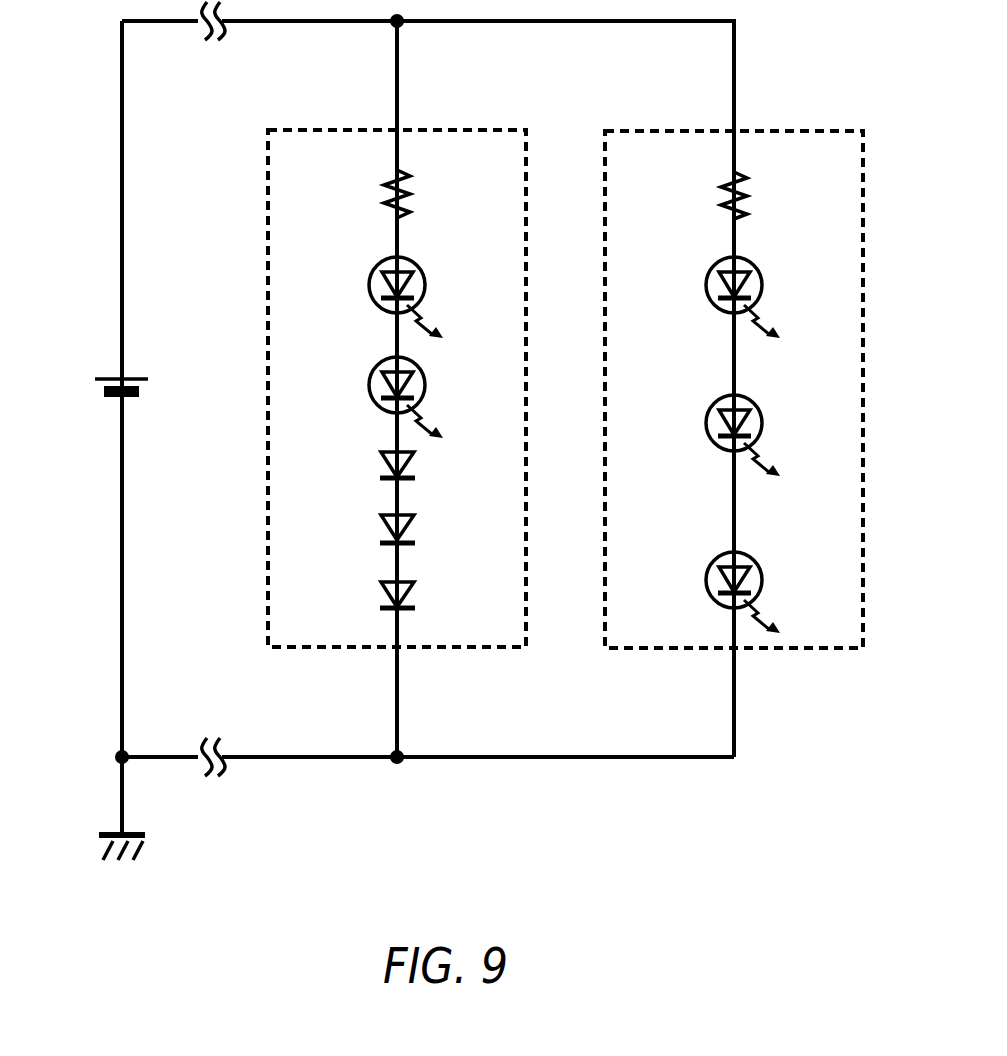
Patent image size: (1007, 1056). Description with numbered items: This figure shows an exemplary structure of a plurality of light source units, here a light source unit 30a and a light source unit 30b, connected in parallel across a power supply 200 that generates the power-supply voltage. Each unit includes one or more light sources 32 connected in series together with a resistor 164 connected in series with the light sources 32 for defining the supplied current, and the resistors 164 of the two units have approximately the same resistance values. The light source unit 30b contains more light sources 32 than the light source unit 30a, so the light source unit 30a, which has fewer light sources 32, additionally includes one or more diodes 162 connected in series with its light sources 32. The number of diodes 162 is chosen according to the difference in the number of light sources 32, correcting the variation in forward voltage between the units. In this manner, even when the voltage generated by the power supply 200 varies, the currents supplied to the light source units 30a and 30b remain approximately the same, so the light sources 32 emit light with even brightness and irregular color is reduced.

The power supply 200 is at (104, 378).
The light source unit 30a is at (462, 130).
The light source unit 30b is at (800, 131).
The resistor 164 is at (384, 189).
The light source 32 is at (368, 283).
The diode 162 is at (382, 464).